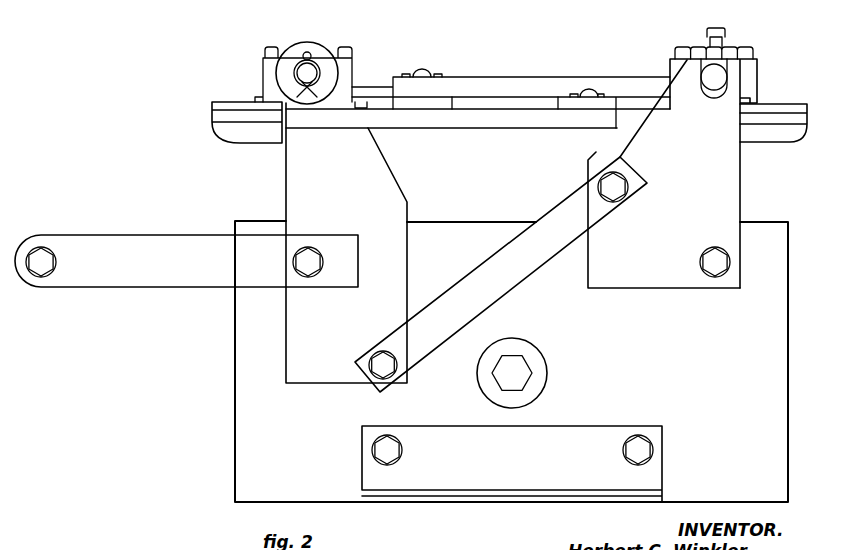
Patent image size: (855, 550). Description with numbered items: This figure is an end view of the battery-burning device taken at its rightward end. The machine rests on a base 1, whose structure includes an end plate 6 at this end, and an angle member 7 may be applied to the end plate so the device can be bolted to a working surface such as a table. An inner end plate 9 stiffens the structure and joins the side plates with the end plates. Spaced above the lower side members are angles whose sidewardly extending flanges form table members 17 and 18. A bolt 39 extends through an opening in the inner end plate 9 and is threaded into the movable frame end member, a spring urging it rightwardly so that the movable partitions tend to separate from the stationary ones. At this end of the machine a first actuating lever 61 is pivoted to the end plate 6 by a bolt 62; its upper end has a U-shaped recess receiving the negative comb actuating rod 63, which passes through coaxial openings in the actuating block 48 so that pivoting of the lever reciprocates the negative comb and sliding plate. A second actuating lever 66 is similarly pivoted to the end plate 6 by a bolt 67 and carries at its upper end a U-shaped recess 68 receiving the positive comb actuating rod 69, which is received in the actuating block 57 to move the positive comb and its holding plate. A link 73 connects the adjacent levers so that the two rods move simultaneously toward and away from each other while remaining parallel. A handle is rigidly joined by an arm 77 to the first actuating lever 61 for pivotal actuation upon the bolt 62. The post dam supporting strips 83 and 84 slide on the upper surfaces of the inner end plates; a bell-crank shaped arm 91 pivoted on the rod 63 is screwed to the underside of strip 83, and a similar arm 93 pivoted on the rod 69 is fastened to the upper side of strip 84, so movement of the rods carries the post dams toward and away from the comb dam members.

The base 1 is at (478, 361).
The end plate 6 is at (245, 422).
The angle member 7 is at (477, 467).
The inner end plate 9 is at (522, 175).
The table member 17 is at (240, 141).
The table member 18 is at (772, 133).
The bolt 39 is at (518, 370).
The actuating block 48 is at (268, 65).
The actuating block 57 is at (752, 86).
The first actuating lever 61 is at (372, 163).
The bolt 62 is at (298, 257).
The negative comb actuating rod 63 is at (310, 71).
The second actuating lever 66 is at (613, 147).
The bolt 67 is at (705, 262).
The U-shaped recess 68 is at (700, 84).
The positive comb actuating rod 69 is at (710, 68).
The link 73 is at (507, 275).
The arm 77 is at (170, 245).
The post dam supporting strip 83 is at (573, 100).
The post dam supporting strip 84 is at (438, 100).
The arm 91 is at (508, 120).
The arm 93 is at (483, 85).